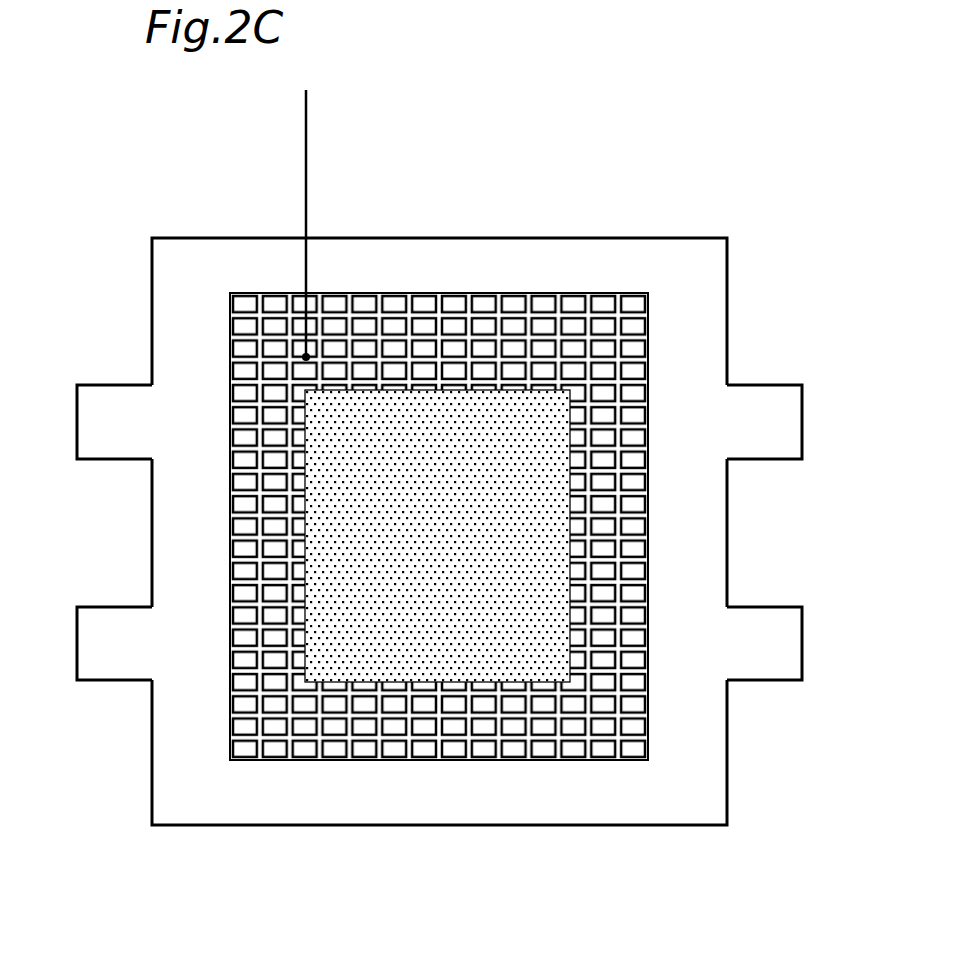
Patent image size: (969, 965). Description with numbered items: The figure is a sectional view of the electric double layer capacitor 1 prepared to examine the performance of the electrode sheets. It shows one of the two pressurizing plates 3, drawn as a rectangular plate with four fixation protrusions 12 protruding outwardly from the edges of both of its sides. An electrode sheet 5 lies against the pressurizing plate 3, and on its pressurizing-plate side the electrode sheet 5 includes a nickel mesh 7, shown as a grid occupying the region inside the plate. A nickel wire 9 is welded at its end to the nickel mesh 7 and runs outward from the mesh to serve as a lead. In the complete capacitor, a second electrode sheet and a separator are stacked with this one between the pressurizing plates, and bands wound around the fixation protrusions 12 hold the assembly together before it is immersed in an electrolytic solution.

The electric double layer capacitor 1 is at (445, 457).
The pressurizing plate 3 is at (672, 254).
The electrode sheet 5 is at (396, 428).
The nickel mesh 7 is at (548, 305).
The nickel wire 9 is at (341, 225).
The fixation protrusion 12 is at (113, 393).